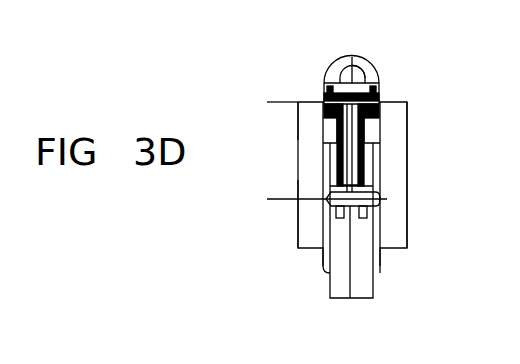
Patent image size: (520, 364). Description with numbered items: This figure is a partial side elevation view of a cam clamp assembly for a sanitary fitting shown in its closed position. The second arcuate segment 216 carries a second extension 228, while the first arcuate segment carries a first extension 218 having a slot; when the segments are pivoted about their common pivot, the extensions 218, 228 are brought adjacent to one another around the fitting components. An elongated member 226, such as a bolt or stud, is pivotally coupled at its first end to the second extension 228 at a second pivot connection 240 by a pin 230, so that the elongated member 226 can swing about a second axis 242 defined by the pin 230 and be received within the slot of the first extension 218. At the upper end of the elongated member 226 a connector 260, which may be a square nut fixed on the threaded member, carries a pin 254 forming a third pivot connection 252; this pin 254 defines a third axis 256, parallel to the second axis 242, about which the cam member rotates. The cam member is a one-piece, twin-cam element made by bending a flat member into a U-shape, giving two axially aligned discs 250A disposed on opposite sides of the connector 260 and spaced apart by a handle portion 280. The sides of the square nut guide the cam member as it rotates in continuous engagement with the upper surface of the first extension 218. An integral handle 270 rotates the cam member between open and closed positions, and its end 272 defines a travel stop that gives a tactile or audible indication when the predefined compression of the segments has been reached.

The second arcuate segment 216 is at (335, 292).
The first extension 218 is at (393, 160).
The elongated member 226 is at (347, 160).
The second extension 228 is at (380, 207).
The pin 230 is at (386, 196).
The second pivot connection 240 is at (478, 218).
The second axis 242 is at (288, 204).
The axially aligned discs 250A is at (331, 133).
The third pivot connection 252 is at (312, 110).
The pin 254 is at (372, 107).
The third axis 256 is at (288, 102).
The connector 260 is at (380, 80).
The handle 270 is at (363, 58).
The end 272 is at (353, 66).
The handle portion 280 is at (341, 64).